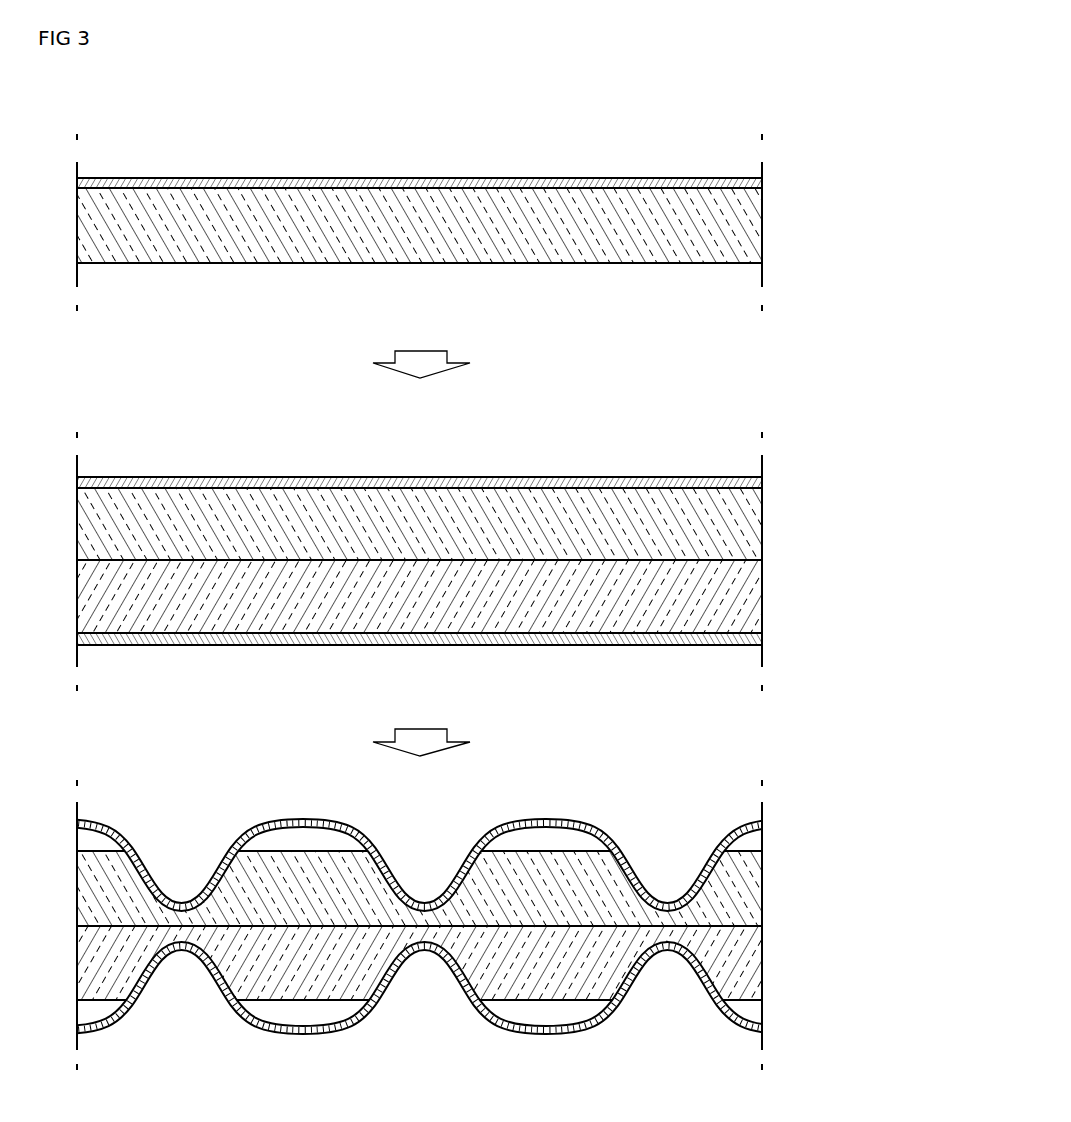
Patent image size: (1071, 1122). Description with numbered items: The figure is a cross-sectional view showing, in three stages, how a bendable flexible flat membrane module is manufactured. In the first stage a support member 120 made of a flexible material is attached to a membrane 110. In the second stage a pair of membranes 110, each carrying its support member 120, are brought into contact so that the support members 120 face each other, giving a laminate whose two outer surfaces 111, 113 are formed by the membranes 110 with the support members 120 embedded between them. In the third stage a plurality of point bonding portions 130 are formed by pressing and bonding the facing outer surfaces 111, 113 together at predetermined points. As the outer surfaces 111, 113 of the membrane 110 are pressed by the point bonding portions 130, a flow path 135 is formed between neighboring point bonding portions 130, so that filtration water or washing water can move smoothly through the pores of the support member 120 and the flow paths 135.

The membrane 110 is at (872, 478).
The outer surface 111 is at (622, 178).
The outer surface 113 is at (735, 646).
The support member 120 is at (640, 263).
The point bonding portion 130 is at (425, 898).
The flow path 135 is at (540, 845).